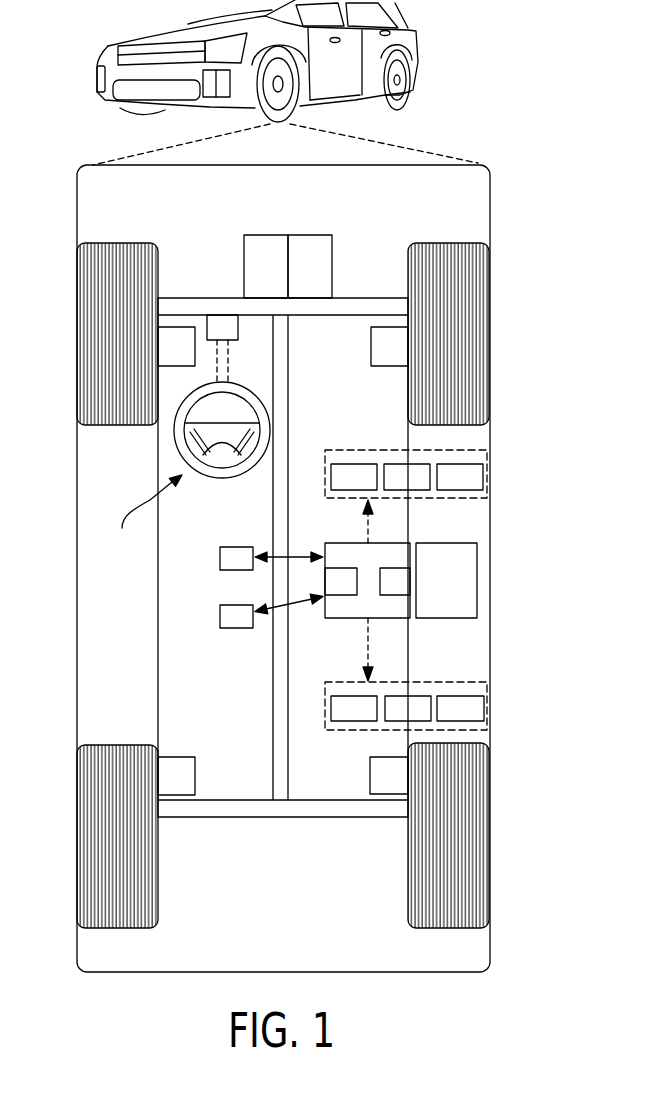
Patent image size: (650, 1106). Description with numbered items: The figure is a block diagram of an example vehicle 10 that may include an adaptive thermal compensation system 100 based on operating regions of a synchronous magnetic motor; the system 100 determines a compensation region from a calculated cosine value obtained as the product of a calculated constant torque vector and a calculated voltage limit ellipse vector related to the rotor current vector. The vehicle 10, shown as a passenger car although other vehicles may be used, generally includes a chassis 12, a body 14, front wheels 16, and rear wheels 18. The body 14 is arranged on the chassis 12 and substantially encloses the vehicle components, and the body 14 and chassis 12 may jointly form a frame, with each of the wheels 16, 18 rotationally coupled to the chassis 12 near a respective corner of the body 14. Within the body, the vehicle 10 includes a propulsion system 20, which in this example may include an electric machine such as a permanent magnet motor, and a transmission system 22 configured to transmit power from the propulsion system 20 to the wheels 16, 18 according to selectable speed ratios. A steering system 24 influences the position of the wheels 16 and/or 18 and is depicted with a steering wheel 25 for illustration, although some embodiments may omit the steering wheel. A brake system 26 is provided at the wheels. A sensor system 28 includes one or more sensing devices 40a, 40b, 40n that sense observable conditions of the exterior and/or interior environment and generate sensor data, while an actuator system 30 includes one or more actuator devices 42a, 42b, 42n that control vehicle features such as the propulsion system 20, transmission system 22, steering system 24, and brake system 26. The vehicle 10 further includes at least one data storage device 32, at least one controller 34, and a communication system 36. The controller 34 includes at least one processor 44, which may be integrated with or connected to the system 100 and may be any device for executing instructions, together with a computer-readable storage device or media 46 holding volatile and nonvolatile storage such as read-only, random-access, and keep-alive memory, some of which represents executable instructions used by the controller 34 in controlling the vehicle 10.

The vehicle 10 is at (107, 47).
The chassis 12 is at (280, 818).
The body 14 is at (76, 532).
The front wheels 16 is at (121, 258).
The rear wheels 18 is at (122, 760).
The propulsion system 20 is at (244, 268).
The transmission system 22 is at (320, 268).
The steering system 24 is at (175, 439).
The steering wheel 25 is at (236, 470).
The brake system 26 is at (183, 340).
The sensor system 28 is at (372, 450).
The actuator system 30 is at (433, 682).
The data storage device 32 is at (222, 560).
The controller 34 is at (336, 556).
The communication system 36 is at (446, 567).
The sensing device 40a is at (352, 475).
The sensing device 40b is at (408, 475).
The sensing device 40n is at (470, 477).
The actuator device 42a is at (352, 707).
The actuator device 42b is at (410, 707).
The actuator device 42n is at (470, 708).
The processor 44 is at (343, 587).
The computer-readable storage device or media 46 is at (393, 585).
The adaptive thermal compensation system 100 is at (238, 618).